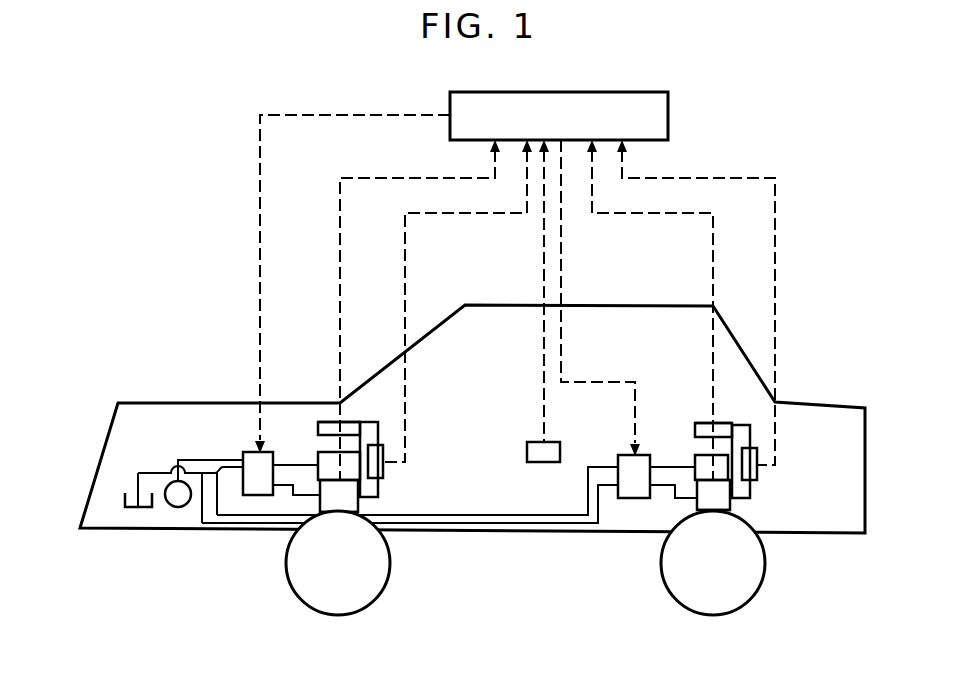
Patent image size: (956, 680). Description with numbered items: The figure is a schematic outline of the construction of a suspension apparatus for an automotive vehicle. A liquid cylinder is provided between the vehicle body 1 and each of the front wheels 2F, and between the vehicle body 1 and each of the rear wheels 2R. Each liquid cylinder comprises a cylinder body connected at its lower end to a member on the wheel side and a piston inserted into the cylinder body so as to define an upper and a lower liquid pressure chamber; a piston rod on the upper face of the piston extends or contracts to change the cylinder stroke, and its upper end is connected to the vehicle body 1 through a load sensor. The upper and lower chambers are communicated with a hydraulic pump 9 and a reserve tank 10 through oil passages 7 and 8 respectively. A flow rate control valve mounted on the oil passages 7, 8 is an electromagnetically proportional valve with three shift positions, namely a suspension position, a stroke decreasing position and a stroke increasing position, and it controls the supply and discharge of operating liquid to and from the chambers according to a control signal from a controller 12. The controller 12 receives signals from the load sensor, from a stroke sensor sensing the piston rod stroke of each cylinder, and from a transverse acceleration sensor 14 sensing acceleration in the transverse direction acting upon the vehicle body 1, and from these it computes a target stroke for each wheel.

The vehicle body 1 is at (632, 305).
The front wheel 2F is at (386, 596).
The rear wheel 2R is at (666, 594).
The oil passage 7 is at (528, 516).
The oil passage 8 is at (537, 524).
The hydraulic pump 9 is at (178, 507).
The reserve tank 10 is at (124, 508).
The controller 12 is at (668, 116).
The transverse acceleration sensor 14 is at (532, 442).